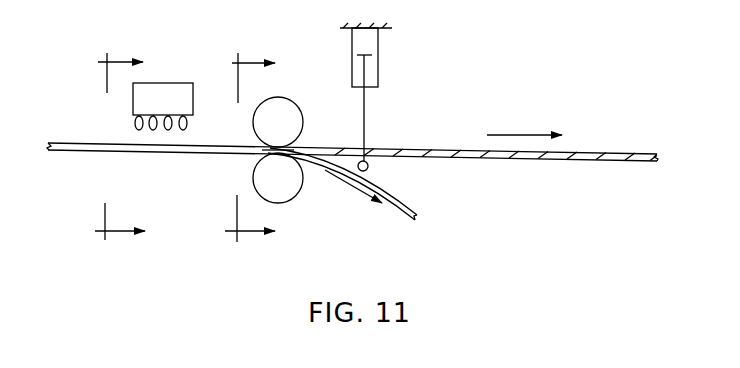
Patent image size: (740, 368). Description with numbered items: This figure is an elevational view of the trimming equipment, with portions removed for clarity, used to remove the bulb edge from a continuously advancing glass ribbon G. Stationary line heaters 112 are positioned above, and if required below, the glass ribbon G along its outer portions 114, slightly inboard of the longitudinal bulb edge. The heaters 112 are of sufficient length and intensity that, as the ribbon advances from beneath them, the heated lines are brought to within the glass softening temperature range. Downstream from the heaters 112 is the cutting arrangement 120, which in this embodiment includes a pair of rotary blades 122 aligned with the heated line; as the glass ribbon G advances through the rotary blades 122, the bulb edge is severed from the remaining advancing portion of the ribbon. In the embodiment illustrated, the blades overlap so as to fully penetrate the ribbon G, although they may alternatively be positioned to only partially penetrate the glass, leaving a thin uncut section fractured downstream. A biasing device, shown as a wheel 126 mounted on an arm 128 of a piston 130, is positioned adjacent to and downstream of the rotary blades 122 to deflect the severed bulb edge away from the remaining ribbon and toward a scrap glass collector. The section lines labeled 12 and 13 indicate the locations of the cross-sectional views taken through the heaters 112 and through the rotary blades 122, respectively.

The glass ribbon G is at (583, 152).
The section line 12- 12 is at (131, 148).
The section line 13- 13 is at (261, 148).
The stationary line heaters 112 is at (133, 106).
The outer portions 114 is at (420, 212).
The cutting arrangement 120 is at (303, 92).
The rotary blades 122 is at (257, 147).
The wheel 126 is at (369, 167).
The arm 128 is at (365, 114).
The piston 130 is at (378, 53).